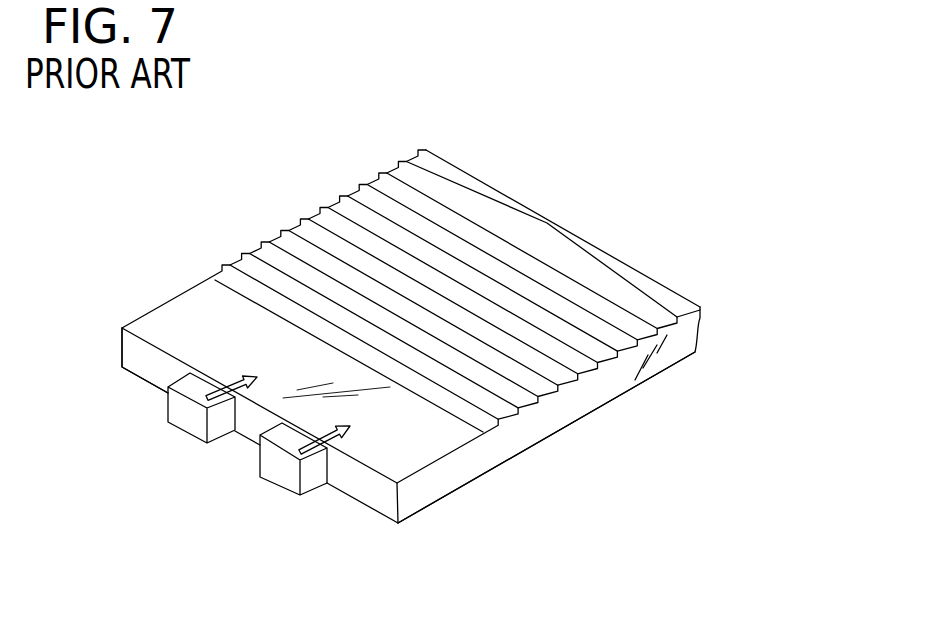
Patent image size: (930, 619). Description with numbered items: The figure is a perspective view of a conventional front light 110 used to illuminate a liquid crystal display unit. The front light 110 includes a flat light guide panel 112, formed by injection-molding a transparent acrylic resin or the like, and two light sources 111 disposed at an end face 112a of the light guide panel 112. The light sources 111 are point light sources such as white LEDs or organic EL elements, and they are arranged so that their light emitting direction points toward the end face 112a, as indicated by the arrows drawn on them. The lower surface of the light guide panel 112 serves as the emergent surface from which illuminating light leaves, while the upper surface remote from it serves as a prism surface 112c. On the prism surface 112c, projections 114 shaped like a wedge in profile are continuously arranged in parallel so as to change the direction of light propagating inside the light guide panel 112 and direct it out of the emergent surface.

The front light 110 is at (562, 210).
The light sources 111 is at (190, 423).
The light guide panel 112 is at (583, 397).
The end face 112a is at (143, 362).
The prism surface 112c is at (185, 318).
The projections 114 is at (307, 257).